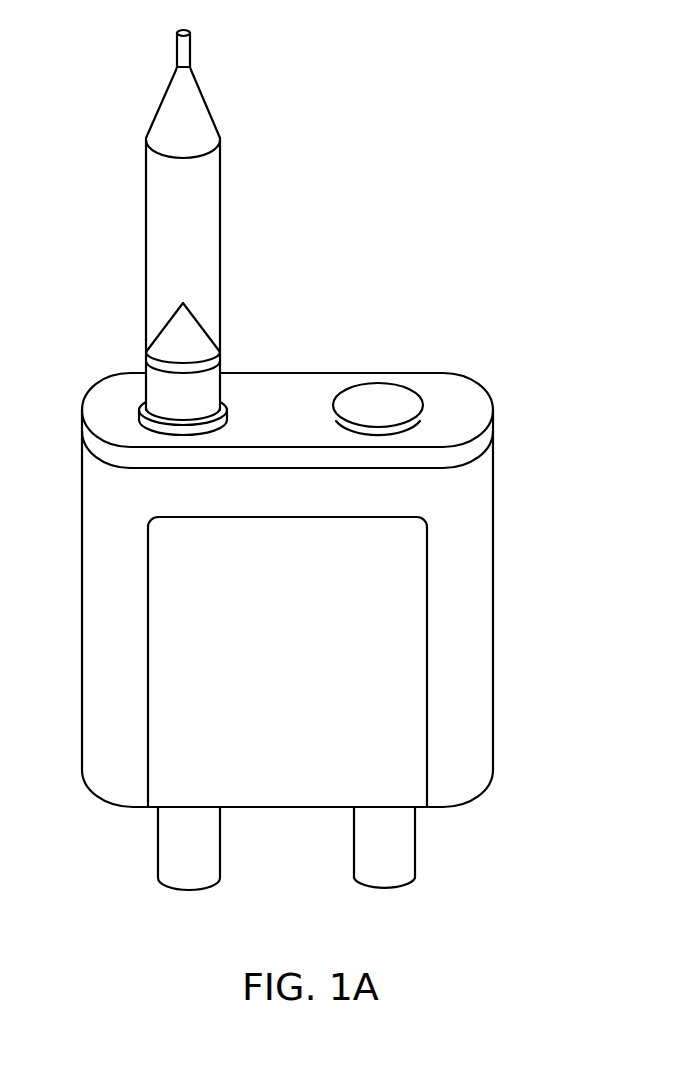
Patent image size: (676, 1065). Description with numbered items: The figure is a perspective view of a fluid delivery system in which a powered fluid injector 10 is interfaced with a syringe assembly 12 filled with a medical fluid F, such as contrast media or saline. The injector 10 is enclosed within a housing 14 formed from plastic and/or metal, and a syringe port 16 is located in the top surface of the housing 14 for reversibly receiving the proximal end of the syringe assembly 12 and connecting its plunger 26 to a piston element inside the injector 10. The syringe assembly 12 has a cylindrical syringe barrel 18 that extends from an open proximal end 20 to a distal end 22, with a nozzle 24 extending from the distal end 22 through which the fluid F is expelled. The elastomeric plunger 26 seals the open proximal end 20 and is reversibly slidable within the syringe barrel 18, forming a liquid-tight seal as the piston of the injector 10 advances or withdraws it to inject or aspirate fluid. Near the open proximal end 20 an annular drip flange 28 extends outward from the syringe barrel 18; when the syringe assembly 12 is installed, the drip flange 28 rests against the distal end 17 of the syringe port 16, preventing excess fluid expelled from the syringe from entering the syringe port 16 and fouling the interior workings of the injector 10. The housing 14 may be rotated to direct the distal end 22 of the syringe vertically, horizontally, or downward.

The fluid injector 10 is at (412, 240).
The syringe assembly 12 is at (112, 240).
The housing 14 is at (477, 642).
The syringe port 16 is at (138, 415).
The distal end of the syringe port 17 is at (100, 393).
The syringe barrel 18 is at (220, 225).
The open proximal end 20 is at (203, 395).
The distal end 22 is at (197, 118).
The nozzle 24 is at (189, 52).
The plunger 26 is at (193, 327).
The drip flange 28 is at (140, 400).
The medical fluid F is at (200, 180).